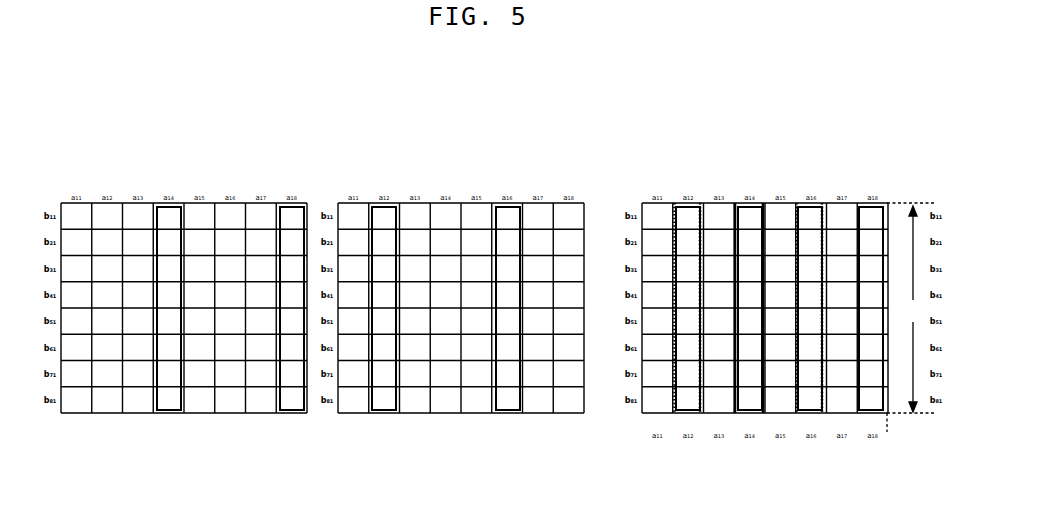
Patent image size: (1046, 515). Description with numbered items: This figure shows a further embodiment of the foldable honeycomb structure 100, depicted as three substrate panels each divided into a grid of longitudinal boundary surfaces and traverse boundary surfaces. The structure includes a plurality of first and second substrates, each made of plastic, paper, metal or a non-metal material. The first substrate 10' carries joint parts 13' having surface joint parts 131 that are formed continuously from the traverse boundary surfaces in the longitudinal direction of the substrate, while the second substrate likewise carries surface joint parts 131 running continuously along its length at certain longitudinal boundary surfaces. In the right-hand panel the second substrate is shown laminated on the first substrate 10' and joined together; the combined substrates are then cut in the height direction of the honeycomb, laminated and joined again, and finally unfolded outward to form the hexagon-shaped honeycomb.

The foldable honeycomb structure 100 is at (78, 132).
The surface joint parts 131 is at (860, 210).
The first substrate 10' is at (571, 343).
The joint parts 13' is at (784, 267).